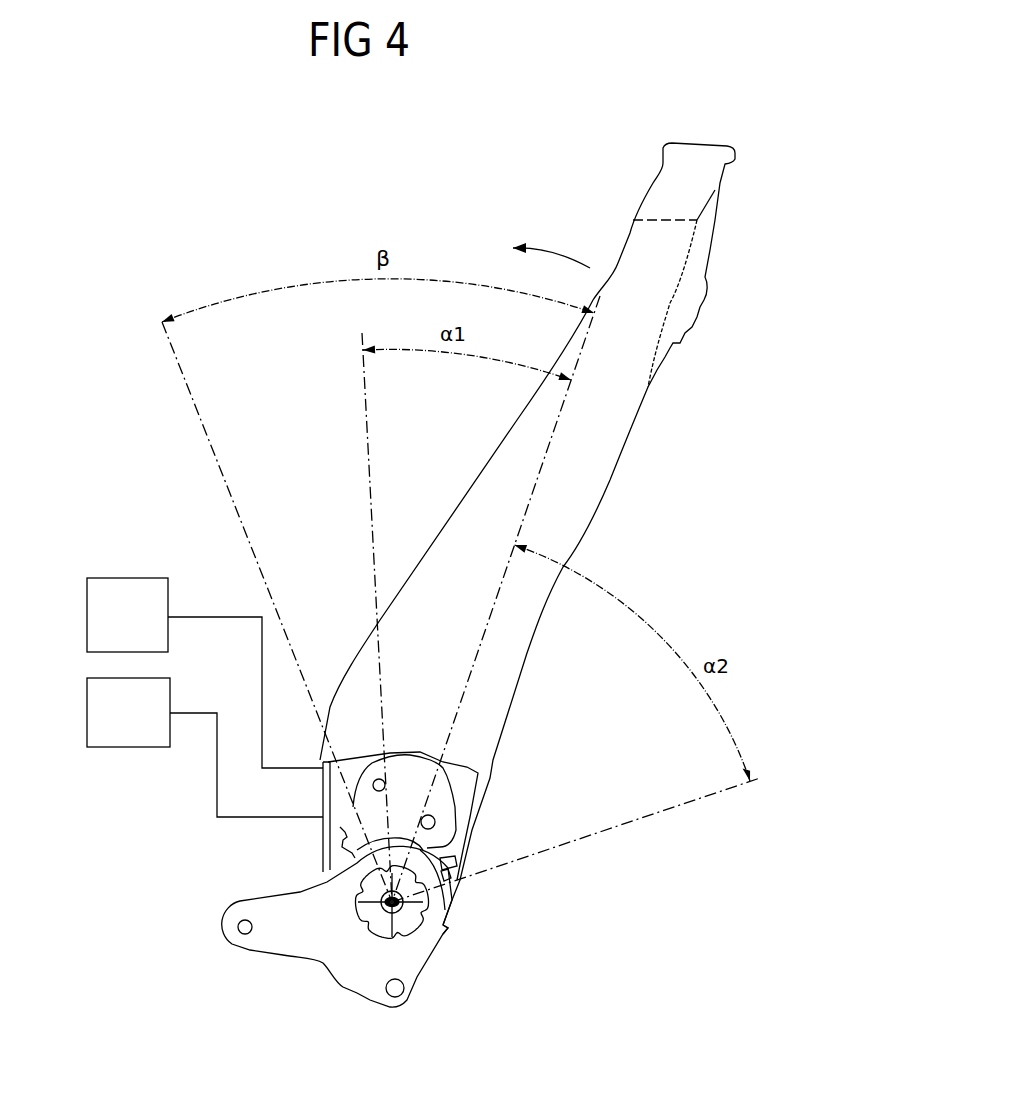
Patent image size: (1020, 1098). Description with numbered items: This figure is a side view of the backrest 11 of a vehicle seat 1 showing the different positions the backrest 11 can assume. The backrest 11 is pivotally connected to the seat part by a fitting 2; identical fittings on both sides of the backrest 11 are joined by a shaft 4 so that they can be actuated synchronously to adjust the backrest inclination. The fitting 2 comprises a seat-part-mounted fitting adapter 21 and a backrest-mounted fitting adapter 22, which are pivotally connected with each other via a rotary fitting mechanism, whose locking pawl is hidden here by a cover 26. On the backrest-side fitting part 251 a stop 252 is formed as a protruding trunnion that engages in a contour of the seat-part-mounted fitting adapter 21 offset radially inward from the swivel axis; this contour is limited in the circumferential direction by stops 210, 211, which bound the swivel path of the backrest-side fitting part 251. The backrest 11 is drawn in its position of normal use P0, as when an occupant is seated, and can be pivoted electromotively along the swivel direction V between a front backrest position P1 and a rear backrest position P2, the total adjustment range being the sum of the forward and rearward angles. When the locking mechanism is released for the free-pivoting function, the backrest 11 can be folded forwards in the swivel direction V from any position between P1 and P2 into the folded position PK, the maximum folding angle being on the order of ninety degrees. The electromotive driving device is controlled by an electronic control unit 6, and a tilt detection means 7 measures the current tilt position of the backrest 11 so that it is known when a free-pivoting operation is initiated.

The vehicle seat 1 is at (712, 610).
The fitting 2 is at (447, 972).
The shaft 4 is at (392, 903).
The electronic control unit 6 is at (100, 620).
The tilt detection means 7 is at (100, 718).
The backrest 11 is at (592, 482).
The seat-part-mounted fitting adapter 21 is at (297, 945).
The backrest-mounted fitting adapter 22 is at (480, 782).
The cover 26 is at (372, 812).
The stop 210 is at (425, 853).
The stop 211 is at (448, 926).
The backrest-side fitting part 251 is at (447, 863).
The stop 252 is at (453, 878).
The position of normal use P0 is at (563, 420).
The front backrest position P1 is at (367, 427).
The rear backrest position P2 is at (703, 798).
The folded position PK is at (232, 490).
The swivel direction V is at (554, 240).